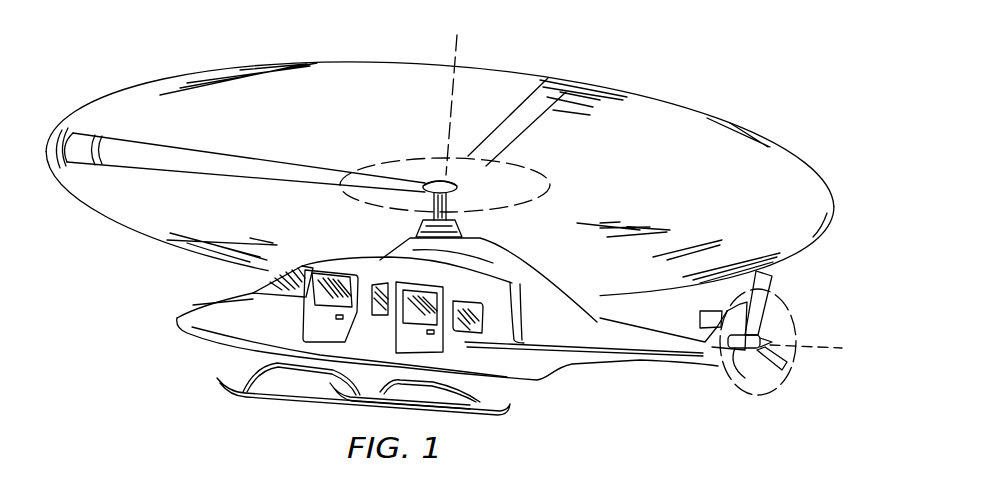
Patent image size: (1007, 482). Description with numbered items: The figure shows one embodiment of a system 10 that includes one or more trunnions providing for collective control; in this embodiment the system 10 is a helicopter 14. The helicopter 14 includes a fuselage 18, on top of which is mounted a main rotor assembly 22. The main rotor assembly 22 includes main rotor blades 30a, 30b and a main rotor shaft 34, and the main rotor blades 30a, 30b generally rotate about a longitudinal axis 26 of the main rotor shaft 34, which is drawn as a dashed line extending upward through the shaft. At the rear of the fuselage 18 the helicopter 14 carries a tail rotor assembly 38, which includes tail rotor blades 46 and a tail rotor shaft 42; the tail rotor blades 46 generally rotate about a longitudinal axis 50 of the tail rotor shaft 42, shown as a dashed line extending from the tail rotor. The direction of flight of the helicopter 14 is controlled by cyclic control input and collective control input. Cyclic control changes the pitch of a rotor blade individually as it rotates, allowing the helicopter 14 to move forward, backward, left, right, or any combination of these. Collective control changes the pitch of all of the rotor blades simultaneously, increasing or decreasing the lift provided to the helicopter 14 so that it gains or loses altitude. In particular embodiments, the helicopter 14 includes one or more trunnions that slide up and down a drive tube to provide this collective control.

The system 10 is at (608, 57).
The helicopter 14 is at (540, 382).
The fuselage 18 is at (209, 337).
The main rotor assembly 22 is at (499, 225).
The longitudinal axis 26 is at (447, 101).
The main rotor blade 30a is at (186, 150).
The main rotor blade 30b is at (530, 142).
The main rotor shaft 34 is at (425, 206).
The tail rotor assembly 38 is at (777, 405).
The tail rotor shaft 42 is at (740, 382).
The tail rotor blades 46 is at (783, 313).
The longitudinal axis 50 is at (823, 352).